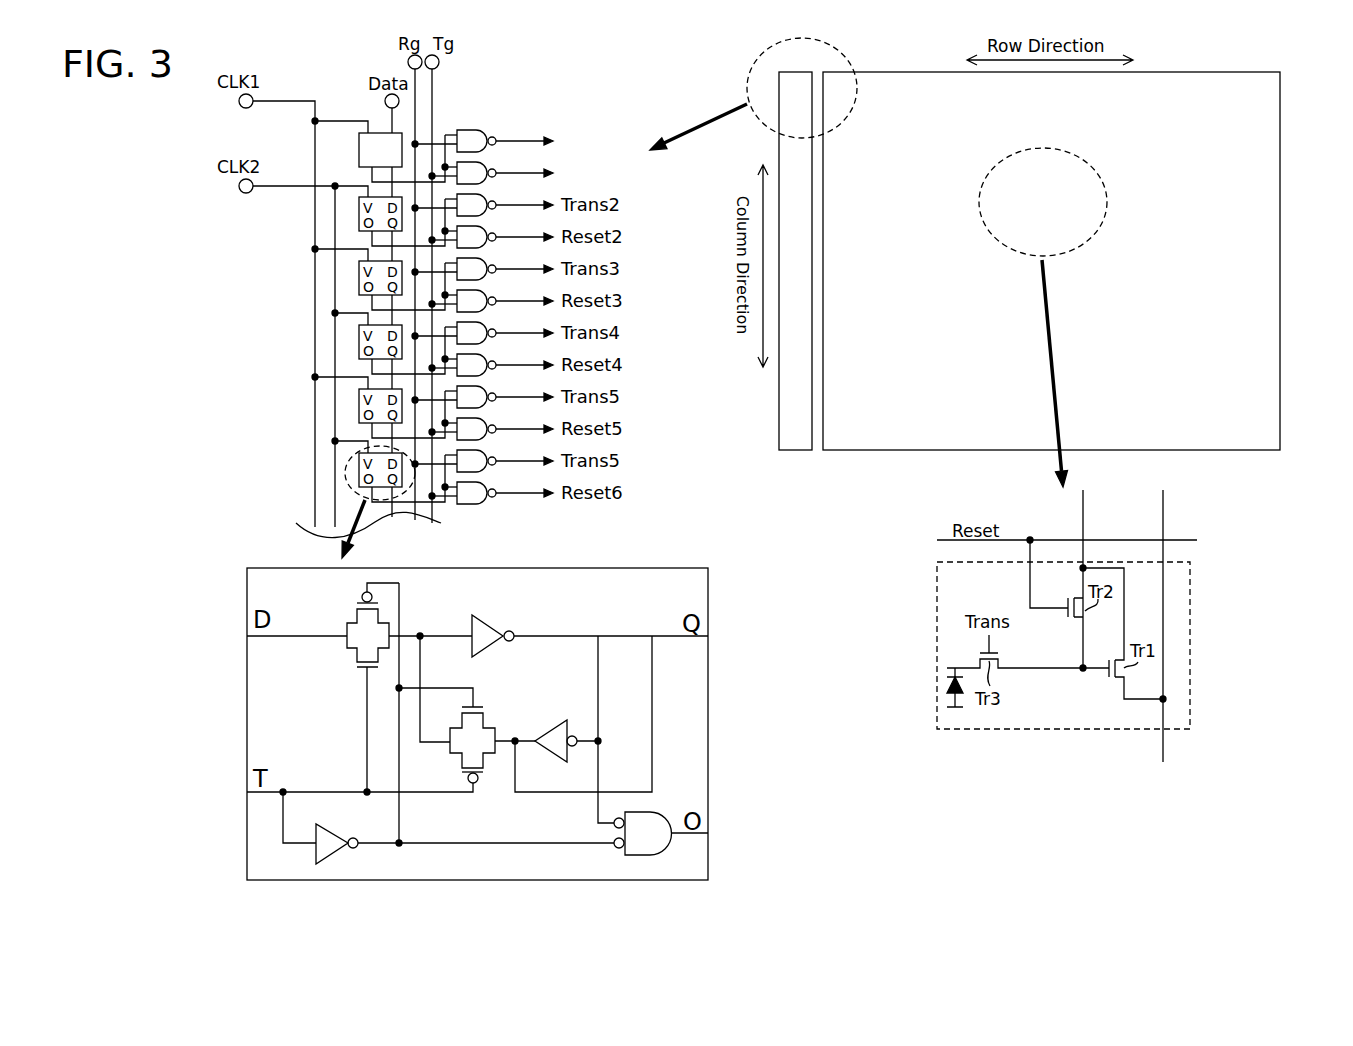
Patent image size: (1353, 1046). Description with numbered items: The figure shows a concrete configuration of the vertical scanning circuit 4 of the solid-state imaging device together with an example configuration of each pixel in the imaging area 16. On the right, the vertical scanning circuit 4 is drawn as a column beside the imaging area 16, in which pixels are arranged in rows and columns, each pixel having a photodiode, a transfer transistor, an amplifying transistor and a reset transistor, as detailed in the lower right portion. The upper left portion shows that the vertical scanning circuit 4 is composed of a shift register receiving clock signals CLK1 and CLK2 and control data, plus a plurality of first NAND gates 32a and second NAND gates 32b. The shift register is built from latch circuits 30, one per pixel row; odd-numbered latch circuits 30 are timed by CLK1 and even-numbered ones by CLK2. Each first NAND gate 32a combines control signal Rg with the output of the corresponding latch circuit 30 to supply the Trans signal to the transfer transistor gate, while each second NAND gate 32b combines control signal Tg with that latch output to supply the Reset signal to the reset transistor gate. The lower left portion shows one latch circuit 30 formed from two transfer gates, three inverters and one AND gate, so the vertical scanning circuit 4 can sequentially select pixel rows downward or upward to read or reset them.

The latch circuit 30 is at (376, 133).
The first NAND gate 32a is at (468, 128).
The second NAND gate 32b is at (486, 157).
The vertical scanning circuit 4 is at (796, 452).
The imaging area 16 is at (1280, 297).